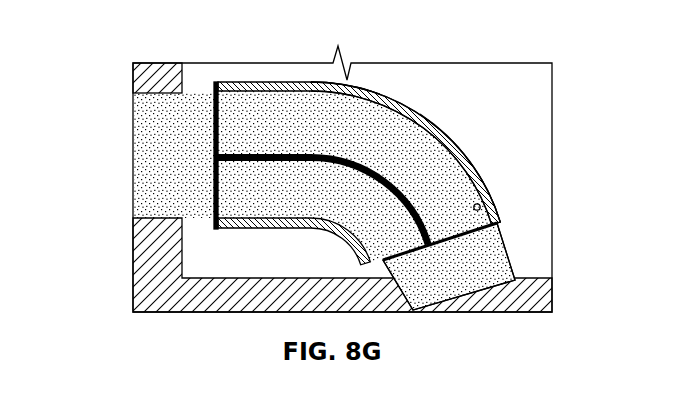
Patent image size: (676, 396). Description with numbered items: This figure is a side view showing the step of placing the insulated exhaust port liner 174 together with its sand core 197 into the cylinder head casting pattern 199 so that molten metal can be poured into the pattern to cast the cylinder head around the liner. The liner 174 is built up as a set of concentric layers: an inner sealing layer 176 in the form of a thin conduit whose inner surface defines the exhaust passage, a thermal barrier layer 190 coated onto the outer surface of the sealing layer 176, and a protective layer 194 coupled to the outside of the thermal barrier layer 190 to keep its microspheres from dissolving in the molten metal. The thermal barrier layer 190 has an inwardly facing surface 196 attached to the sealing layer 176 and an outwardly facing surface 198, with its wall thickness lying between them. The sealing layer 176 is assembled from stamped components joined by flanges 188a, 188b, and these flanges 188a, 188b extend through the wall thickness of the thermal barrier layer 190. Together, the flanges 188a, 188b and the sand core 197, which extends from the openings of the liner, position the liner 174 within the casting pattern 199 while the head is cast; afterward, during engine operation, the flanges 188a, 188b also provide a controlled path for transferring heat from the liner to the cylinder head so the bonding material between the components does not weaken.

The insulated exhaust port liner 174 is at (422, 123).
The sealing layer 176 is at (133, 78).
The flange 188a is at (233, 153).
The flange 188b is at (255, 163).
The thermal barrier layer 190 is at (357, 99).
The protective layer 194 is at (307, 90).
The inwardly facing surface 196 is at (483, 208).
The sand core 197 is at (440, 172).
The outwardly facing surface 198 is at (472, 180).
The cylinder head casting pattern 199 is at (145, 283).